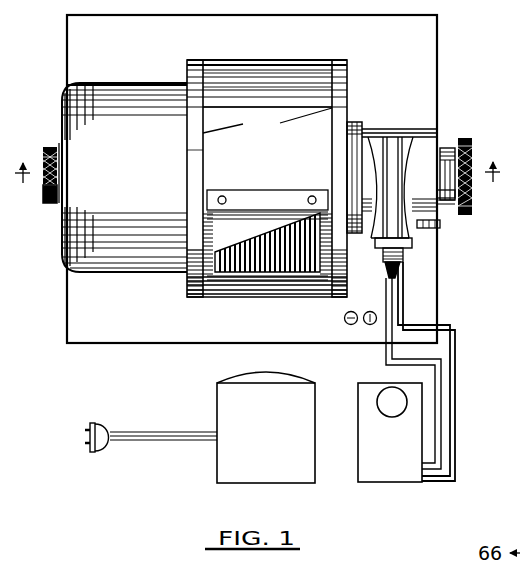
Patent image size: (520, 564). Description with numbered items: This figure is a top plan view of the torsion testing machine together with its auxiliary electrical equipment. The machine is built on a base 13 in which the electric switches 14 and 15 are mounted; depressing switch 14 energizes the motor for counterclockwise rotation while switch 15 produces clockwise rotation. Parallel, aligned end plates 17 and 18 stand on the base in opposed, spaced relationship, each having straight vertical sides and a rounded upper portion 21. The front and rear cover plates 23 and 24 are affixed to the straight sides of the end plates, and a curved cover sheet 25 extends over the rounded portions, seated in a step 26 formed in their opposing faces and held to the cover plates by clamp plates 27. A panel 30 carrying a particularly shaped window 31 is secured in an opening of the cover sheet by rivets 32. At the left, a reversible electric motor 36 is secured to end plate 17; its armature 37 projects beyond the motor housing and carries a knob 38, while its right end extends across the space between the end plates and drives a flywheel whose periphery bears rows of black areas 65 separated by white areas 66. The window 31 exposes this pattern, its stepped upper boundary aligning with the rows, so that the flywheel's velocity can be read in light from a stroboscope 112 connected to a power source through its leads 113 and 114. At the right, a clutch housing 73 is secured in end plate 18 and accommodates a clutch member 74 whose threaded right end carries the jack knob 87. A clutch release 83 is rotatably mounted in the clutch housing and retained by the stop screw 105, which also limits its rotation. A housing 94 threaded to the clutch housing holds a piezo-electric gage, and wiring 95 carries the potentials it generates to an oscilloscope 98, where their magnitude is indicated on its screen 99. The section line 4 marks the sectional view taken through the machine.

The section line 4- 4 is at (257, 183).
The base 13 is at (425, 37).
The electric switch 14 is at (344, 319).
The electric switch 15 is at (368, 327).
The end plate 17 is at (186, 150).
The end plate 18 is at (351, 78).
The rounded upper portion 21 is at (337, 60).
The front cover plate 23 is at (197, 298).
The rear cover plate 24 is at (197, 59).
The curved cover sheet 25 is at (245, 78).
The step 26 is at (267, 122).
The clamp plate 27 is at (285, 62).
The panel 30 is at (254, 197).
The window 31 is at (263, 240).
The rivets 32 is at (224, 195).
The reversible electric motor 36 is at (123, 97).
The armature 37 is at (60, 174).
The knob 38 is at (50, 206).
The black areas 65 is at (346, 255).
The white areas 66 is at (258, 251).
The clutch housing 73 is at (423, 150).
The clutch member 74 is at (446, 160).
The clutch release 83 is at (443, 237).
The jack knob 87 is at (473, 157).
The housing 94 is at (393, 250).
The wiring 95 is at (480, 366).
The oscilloscope 98 is at (398, 468).
The screen 99 is at (392, 402).
The stop screw 105 is at (444, 208).
The stroboscope 112 is at (301, 468).
The lead 113 is at (86, 428).
The lead 114 is at (86, 445).